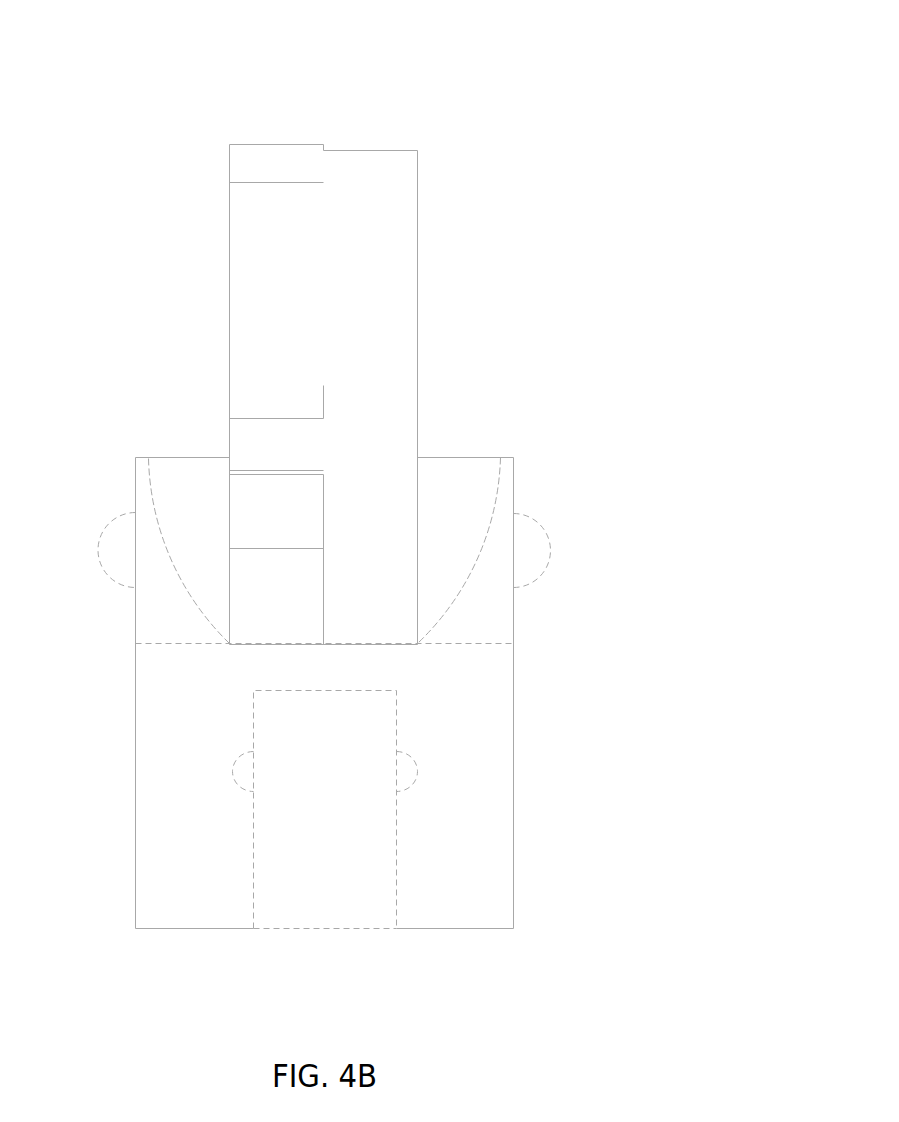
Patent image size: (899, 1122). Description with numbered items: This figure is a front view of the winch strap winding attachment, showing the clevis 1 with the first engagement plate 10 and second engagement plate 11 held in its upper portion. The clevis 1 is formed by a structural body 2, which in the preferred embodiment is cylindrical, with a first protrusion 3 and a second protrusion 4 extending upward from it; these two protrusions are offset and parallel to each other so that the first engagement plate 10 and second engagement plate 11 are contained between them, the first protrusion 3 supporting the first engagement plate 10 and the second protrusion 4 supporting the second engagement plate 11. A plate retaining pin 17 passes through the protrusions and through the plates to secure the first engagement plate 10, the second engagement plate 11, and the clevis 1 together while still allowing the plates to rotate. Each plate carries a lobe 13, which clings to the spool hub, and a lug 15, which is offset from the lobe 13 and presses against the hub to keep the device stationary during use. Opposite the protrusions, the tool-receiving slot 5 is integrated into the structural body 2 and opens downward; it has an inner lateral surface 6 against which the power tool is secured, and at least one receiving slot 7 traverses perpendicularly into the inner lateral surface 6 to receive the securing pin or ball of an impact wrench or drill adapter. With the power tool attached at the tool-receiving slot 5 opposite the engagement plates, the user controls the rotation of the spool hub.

The clevis 1 is at (84, 797).
The structural body 2 is at (502, 843).
The first protrusion 3 is at (493, 635).
The second protrusion 4 is at (148, 625).
The tool-receiving slot 5 is at (342, 952).
The inner lateral surface 6 is at (250, 872).
The receiving slot 7 is at (254, 772).
The first engagement plate 10 is at (378, 86).
The second engagement plate 11 is at (262, 72).
The lobe 13 is at (243, 158).
The lug 15 is at (238, 437).
The plate retaining pin 17 is at (535, 568).